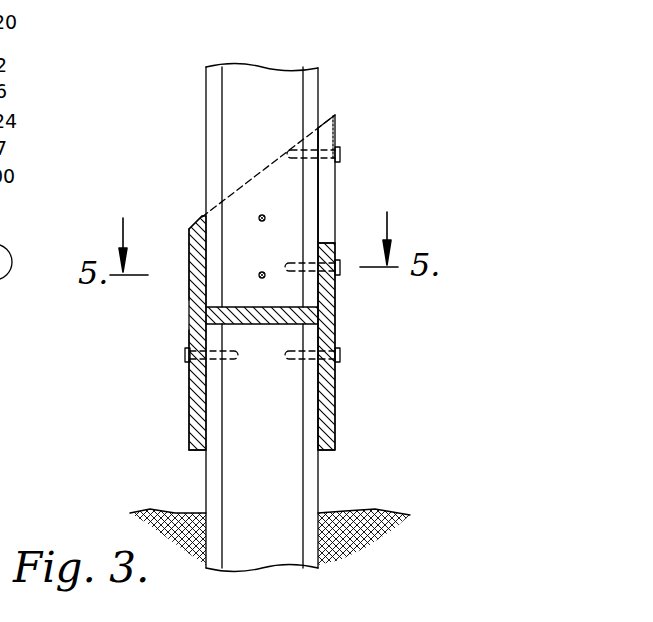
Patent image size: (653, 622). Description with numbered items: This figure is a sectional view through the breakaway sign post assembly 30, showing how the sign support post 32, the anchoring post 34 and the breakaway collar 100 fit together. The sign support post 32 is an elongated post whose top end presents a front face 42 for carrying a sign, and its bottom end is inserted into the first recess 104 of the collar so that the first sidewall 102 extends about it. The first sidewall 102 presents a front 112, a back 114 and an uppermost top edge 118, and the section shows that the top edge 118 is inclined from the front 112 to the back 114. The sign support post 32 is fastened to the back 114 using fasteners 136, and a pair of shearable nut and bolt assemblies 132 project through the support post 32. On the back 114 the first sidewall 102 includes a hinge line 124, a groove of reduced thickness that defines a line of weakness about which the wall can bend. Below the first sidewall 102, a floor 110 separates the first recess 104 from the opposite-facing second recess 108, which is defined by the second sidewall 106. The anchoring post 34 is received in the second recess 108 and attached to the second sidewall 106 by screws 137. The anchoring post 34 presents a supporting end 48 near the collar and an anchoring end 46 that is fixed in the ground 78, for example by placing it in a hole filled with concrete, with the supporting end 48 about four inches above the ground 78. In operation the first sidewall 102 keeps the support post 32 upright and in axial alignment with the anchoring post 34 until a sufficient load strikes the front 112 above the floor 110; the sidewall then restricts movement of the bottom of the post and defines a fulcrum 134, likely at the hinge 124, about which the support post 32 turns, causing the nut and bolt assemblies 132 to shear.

The breakaway sign post assembly 30 is at (352, 58).
The sign support post 32 is at (212, 86).
The front face 42 is at (206, 112).
The anchoring post 34 is at (310, 475).
The anchoring end 46 is at (213, 557).
The ground 78 is at (375, 512).
The breakaway collar 100 is at (197, 286).
The first sidewall 102 is at (325, 198).
The first recess 104 is at (209, 210).
The second sidewall 106 is at (198, 407).
The second recess 108 is at (204, 432).
The floor 110 is at (292, 308).
The front 112 is at (190, 230).
The back 114 is at (335, 172).
The uppermost top edge 118 is at (257, 173).
The hinge line 124 is at (336, 307).
The shearable nut and bolt assemblies 132 is at (265, 221).
The fulcrum 134 is at (340, 307).
The fasteners 136 is at (340, 150).
The screws 137 is at (312, 358).
The supporting end 48 is at (207, 340).